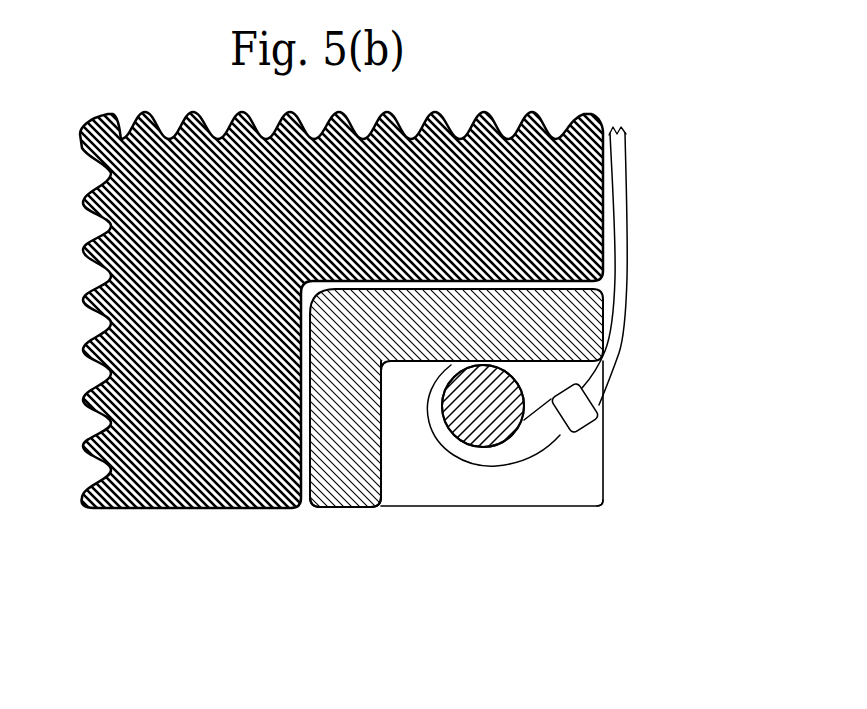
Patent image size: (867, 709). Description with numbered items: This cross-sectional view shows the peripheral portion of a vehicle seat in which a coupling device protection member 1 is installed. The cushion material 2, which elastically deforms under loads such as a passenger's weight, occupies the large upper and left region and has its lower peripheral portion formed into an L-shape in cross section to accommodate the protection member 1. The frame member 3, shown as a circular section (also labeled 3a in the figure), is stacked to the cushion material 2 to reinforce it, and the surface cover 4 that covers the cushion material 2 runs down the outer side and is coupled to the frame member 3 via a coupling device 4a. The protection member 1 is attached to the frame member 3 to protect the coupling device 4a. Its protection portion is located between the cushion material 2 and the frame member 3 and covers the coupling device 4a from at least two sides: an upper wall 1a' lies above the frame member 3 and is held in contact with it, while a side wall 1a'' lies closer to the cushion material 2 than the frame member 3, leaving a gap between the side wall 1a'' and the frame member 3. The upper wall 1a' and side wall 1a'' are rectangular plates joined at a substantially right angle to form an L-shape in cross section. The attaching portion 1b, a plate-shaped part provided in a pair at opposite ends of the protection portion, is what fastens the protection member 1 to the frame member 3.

The coupling device protection member 1 is at (603, 513).
The upper wall 1a' is at (455, 398).
The side wall 1a'' is at (343, 440).
The attaching portion 1b is at (538, 498).
The cushion material 2 is at (131, 484).
The frame member 3 is at (472, 397).
The pin shaft 3a is at (483, 406).
The surface cover 4 is at (620, 246).
The coupling device 4a is at (572, 448).